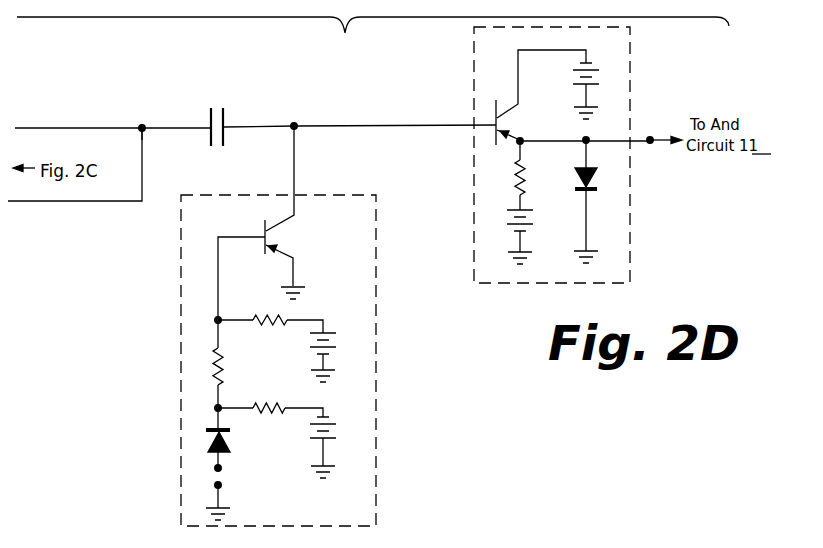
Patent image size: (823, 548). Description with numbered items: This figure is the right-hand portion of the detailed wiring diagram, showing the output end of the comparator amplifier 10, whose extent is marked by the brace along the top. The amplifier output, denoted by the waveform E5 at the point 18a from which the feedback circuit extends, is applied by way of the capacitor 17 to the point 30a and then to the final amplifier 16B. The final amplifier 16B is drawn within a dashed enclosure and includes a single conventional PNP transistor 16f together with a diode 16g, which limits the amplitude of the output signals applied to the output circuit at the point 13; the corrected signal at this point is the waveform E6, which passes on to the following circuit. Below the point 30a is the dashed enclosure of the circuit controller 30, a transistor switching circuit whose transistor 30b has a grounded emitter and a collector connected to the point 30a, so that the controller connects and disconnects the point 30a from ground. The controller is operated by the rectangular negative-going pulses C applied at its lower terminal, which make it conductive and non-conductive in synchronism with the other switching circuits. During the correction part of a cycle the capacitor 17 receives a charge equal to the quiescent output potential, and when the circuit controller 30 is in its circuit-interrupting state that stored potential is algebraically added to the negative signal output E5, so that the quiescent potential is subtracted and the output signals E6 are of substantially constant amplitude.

The comparator amplifier 10 is at (373, 42).
The capacitor 17 is at (219, 111).
The point 18a is at (143, 127).
The point 30a is at (295, 125).
The transistor 30b is at (276, 236).
The circuit controller 30 is at (290, 326).
The final amplifier 16B is at (541, 155).
The transistor 16f is at (495, 129).
The diode 16g is at (600, 176).
The point 13 is at (652, 144).
The signal output of the amplifier E5 is at (145, 131).
The output signals E6 is at (298, 131).
The pulses C is at (208, 477).